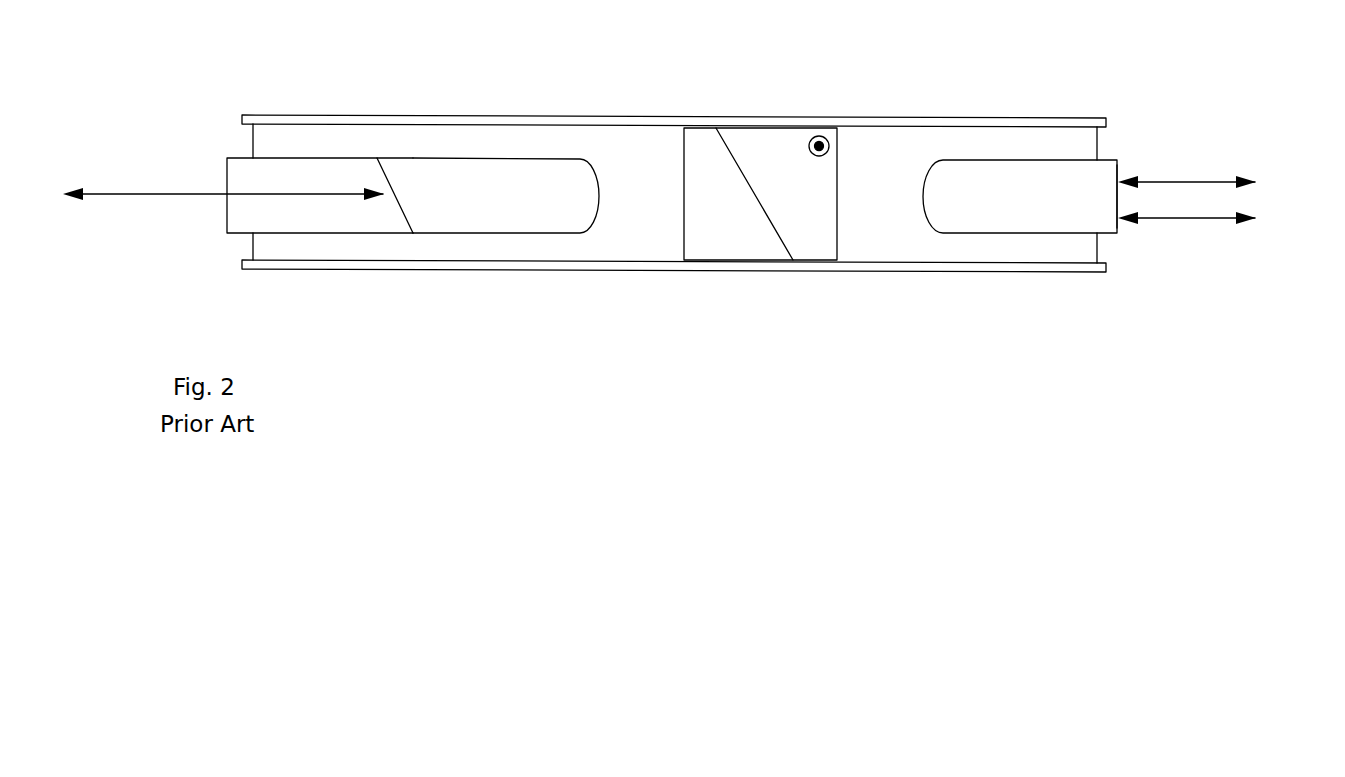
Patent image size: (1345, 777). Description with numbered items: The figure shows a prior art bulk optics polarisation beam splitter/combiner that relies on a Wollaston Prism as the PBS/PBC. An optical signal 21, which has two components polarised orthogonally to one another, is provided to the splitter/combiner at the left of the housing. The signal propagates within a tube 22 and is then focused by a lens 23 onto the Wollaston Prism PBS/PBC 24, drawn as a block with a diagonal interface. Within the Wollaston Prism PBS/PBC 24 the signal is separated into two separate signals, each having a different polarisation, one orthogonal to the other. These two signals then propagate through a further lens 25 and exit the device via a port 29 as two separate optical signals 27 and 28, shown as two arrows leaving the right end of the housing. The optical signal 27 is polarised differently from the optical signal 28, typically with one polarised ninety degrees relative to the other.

The optical signal 21 is at (127, 194).
The tube 22 is at (355, 170).
The lens 23 is at (552, 173).
The Wollaston Prism PBS/PBC 24 is at (799, 149).
The lens 25 is at (1097, 168).
The optical signal 27 is at (1210, 182).
The optical signal 28 is at (1210, 218).
The port 29 is at (1118, 172).